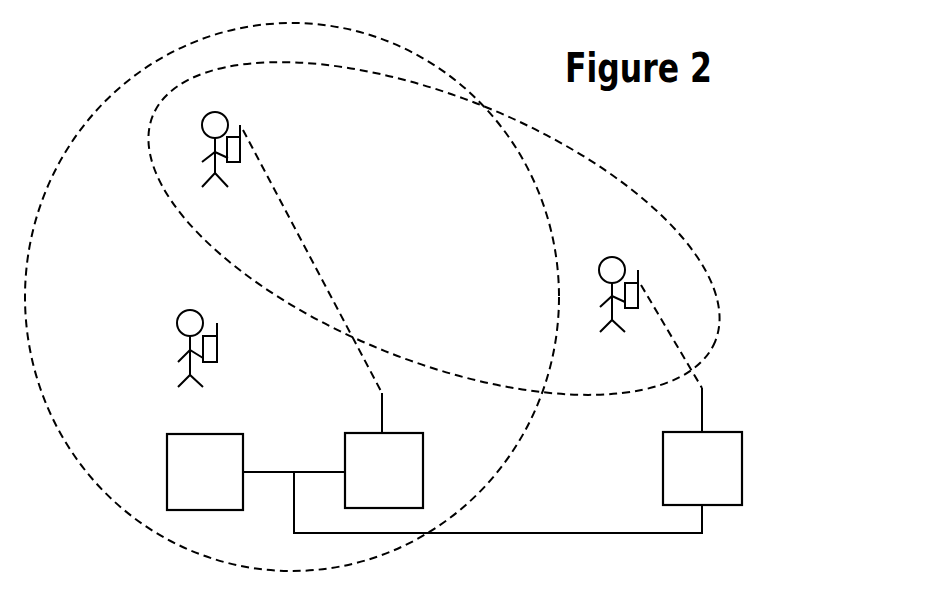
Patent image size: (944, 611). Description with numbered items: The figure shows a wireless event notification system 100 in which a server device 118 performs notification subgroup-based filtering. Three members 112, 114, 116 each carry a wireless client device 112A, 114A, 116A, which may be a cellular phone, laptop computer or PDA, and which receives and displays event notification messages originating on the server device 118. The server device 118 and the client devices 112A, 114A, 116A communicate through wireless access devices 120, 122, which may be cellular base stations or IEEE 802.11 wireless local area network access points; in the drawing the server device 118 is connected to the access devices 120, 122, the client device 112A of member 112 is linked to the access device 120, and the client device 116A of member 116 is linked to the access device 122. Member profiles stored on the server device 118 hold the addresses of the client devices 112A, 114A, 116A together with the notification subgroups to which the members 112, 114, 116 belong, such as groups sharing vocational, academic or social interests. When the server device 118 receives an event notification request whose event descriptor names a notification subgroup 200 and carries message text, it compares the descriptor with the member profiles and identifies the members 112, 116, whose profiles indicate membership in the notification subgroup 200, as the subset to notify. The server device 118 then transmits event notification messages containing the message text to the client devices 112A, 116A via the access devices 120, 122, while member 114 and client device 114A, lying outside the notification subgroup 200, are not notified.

The first wireless network coverage area 100 is at (135, 426).
The notification subgroup 200 is at (455, 251).
The member 112 is at (190, 162).
The client device 112A is at (265, 137).
The member 114 is at (165, 360).
The client device 114A is at (217, 313).
The member 116 is at (612, 343).
The client device 116A is at (638, 245).
The server device 118 is at (225, 486).
The wireless access device 120 is at (407, 484).
The wireless access device 122 is at (723, 482).